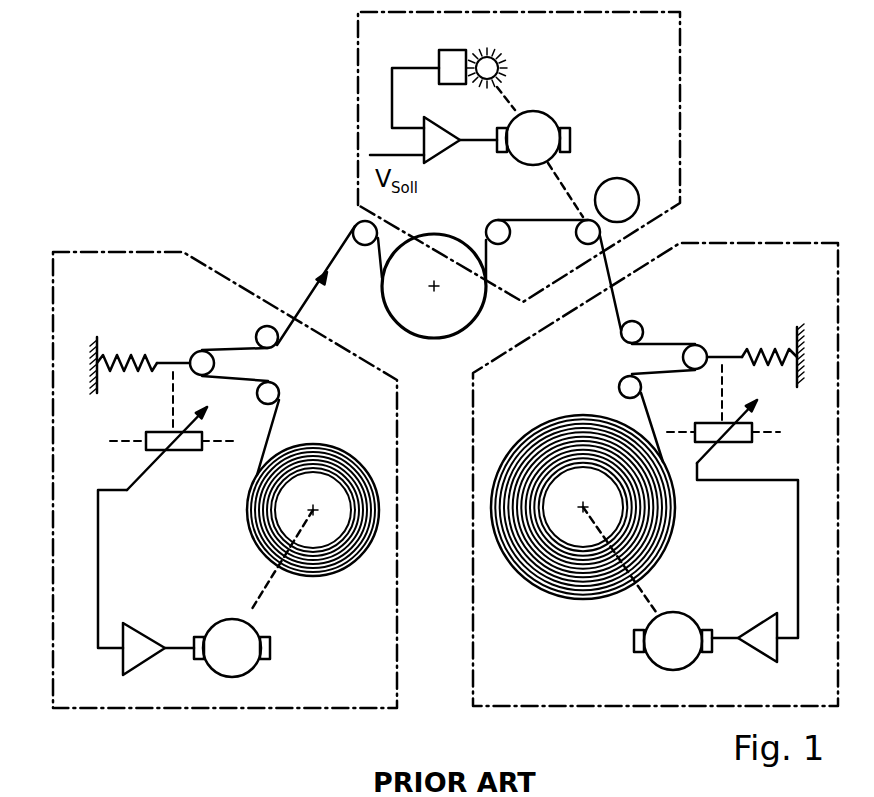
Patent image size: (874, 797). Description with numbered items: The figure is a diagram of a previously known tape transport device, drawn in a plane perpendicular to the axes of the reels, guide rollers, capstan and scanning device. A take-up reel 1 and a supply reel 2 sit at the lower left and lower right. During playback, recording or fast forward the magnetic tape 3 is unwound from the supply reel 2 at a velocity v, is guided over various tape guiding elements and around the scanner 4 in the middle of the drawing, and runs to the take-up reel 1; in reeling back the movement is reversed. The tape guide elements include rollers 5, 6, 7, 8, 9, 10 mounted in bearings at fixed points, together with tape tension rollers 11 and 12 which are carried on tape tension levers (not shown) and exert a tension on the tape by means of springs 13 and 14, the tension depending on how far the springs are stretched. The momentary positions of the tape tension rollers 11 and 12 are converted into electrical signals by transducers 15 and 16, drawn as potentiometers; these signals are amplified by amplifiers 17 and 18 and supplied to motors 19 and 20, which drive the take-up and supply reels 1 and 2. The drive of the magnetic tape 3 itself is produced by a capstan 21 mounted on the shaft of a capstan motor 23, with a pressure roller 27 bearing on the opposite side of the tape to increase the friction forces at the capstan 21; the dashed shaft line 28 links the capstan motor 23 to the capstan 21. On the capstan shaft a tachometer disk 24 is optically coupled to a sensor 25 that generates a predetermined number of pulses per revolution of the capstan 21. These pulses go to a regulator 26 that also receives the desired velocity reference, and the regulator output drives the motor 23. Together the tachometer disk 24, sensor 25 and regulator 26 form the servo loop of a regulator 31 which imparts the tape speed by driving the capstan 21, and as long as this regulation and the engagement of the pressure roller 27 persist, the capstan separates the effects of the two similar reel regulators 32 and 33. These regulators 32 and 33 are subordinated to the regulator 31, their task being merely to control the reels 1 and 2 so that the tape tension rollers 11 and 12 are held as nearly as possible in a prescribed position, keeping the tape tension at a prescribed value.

The take-up reel 1 is at (342, 577).
The supply reel 2 is at (533, 575).
The magnetic tape 3 is at (332, 253).
The scanner 4 is at (427, 345).
The roller 5 is at (620, 387).
The roller 6 is at (637, 328).
The roller 7 is at (488, 222).
The roller 8 is at (355, 229).
The roller 9 is at (260, 328).
The roller 10 is at (281, 393).
The tape tension roller 11 is at (196, 350).
The tape tension roller 12 is at (699, 345).
The spring 13 is at (135, 355).
The spring 14 is at (762, 350).
The transducer 15 is at (154, 431).
The transducer 16 is at (706, 425).
The amplifier 17 is at (140, 637).
The amplifier 18 is at (767, 628).
The motor 19 is at (222, 633).
The motor 20 is at (684, 625).
The capstan 21 is at (580, 238).
The capstan motor 23 is at (543, 120).
The tachometer disk 24 is at (497, 50).
The sensor 25 is at (450, 58).
The regulator 26 is at (437, 151).
The pressure roller 27 is at (622, 190).
The drive shaft 28 is at (552, 183).
The regulator 31 is at (665, 33).
The regulator 32 is at (60, 298).
The regulator 33 is at (823, 268).